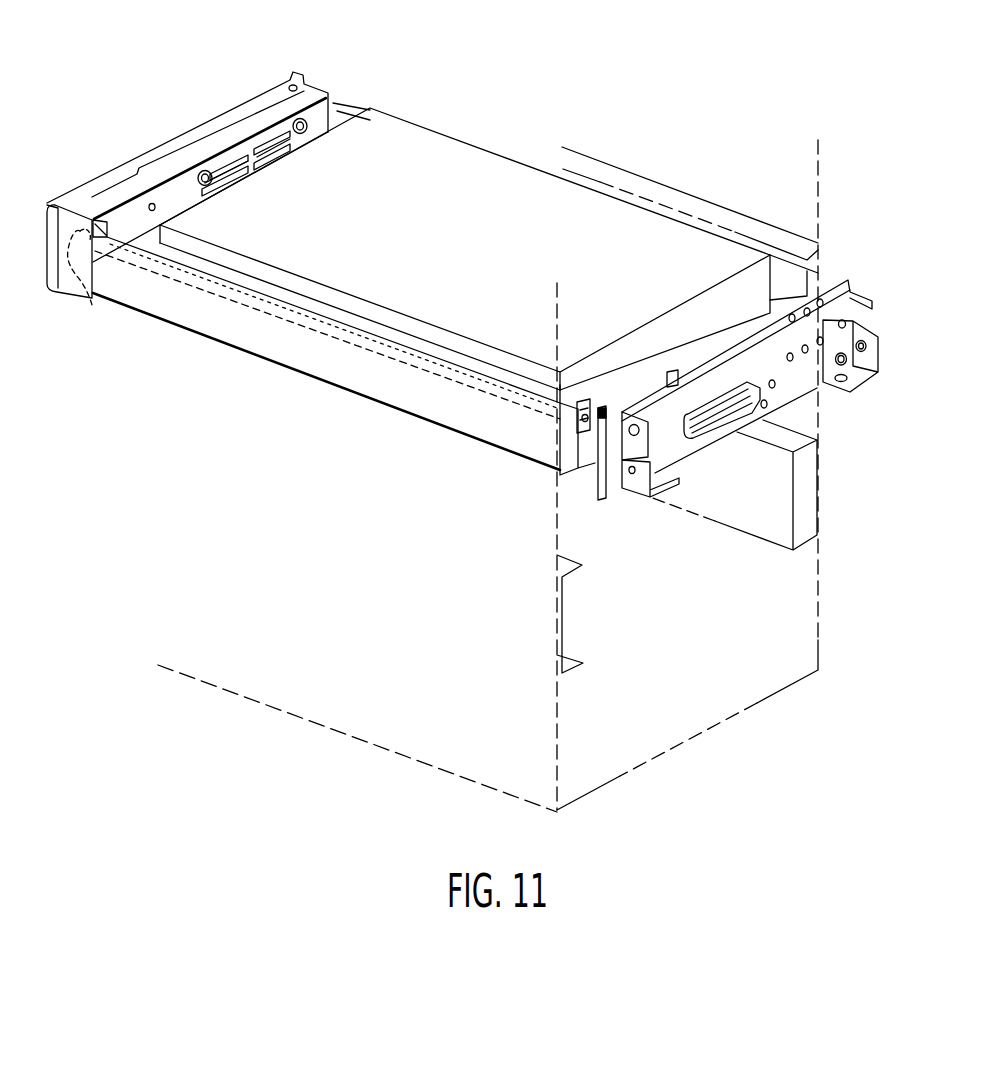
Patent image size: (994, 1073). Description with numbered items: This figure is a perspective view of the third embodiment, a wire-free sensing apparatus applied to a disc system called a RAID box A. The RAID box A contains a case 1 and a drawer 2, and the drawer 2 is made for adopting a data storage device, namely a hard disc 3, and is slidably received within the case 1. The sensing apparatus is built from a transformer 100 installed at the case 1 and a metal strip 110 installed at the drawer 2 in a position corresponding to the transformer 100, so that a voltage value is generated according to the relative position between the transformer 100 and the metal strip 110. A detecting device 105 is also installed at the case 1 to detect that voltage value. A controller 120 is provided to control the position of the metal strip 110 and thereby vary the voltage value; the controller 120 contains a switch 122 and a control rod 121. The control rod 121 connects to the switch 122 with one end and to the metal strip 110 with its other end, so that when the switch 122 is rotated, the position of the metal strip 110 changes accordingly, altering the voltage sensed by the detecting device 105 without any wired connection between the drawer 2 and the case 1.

The case 1 is at (828, 397).
The drawer 2 is at (232, 127).
The hard disc 3 is at (462, 167).
The transformer 100 is at (606, 404).
The detecting device 105 is at (672, 372).
The metal strip 110 is at (582, 401).
The controller 120 is at (140, 388).
The control rod 121 is at (187, 262).
The switch 122 is at (92, 305).
The RAID box A is at (267, 744).